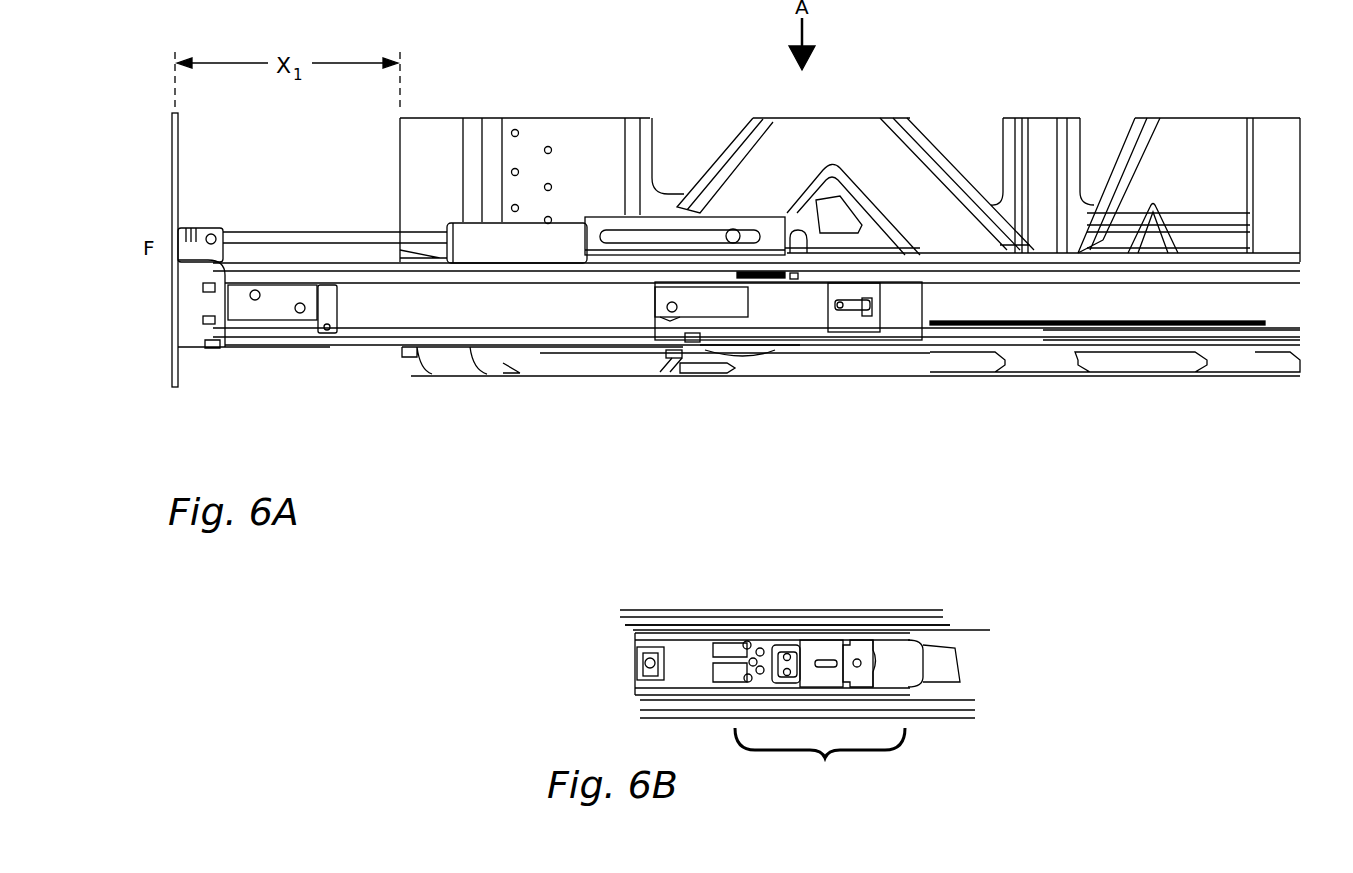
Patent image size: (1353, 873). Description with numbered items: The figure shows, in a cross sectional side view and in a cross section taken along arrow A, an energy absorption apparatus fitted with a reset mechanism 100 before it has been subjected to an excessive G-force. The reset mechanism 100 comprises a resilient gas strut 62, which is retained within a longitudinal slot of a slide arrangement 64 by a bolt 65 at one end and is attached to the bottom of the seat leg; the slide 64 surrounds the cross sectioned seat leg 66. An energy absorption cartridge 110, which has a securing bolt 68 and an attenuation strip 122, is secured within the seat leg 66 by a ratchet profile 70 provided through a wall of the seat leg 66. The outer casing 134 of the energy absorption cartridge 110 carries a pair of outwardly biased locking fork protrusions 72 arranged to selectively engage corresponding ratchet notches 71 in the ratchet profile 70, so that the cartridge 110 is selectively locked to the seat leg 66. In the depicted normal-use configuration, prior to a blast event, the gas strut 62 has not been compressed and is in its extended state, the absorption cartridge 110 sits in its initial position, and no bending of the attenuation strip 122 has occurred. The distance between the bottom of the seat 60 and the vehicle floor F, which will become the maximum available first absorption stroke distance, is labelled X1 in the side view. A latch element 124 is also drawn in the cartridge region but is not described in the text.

In FIG. 6A, the seat 60 is at (1193, 150).
In FIG. 6A, the gas strut 62 is at (473, 233).
In FIG. 6A, the slide arrangement 64 is at (635, 227).
In FIG. 6A, the bolt 65 is at (733, 237).
In FIG. 6A, the seat leg 66 is at (603, 345).
In FIG. 6B, the seat leg 66 is at (910, 627).
In FIG. 6A, the securing bolt 68 is at (667, 355).
In FIG. 6B, the ratchet profile 70 is at (822, 760).
In FIG. 6B, the ratchet notches 71 is at (870, 643).
In FIG. 6A, the locking fork protrusions 72 is at (760, 273).
In FIG. 6B, the locking fork protrusions 72 is at (717, 668).
In FIG. 6A, the reset mechanism 100 is at (392, 406).
In FIG. 6A, the energy absorption cartridge 110 is at (826, 342).
In FIG. 6A, the attenuation strip 122 is at (1160, 321).
In FIG. 6A, the latch 124 is at (860, 300).
In FIG. 6A, the outer casing 134 is at (807, 303).
In FIG. 6B, the outer casing 134 is at (825, 650).